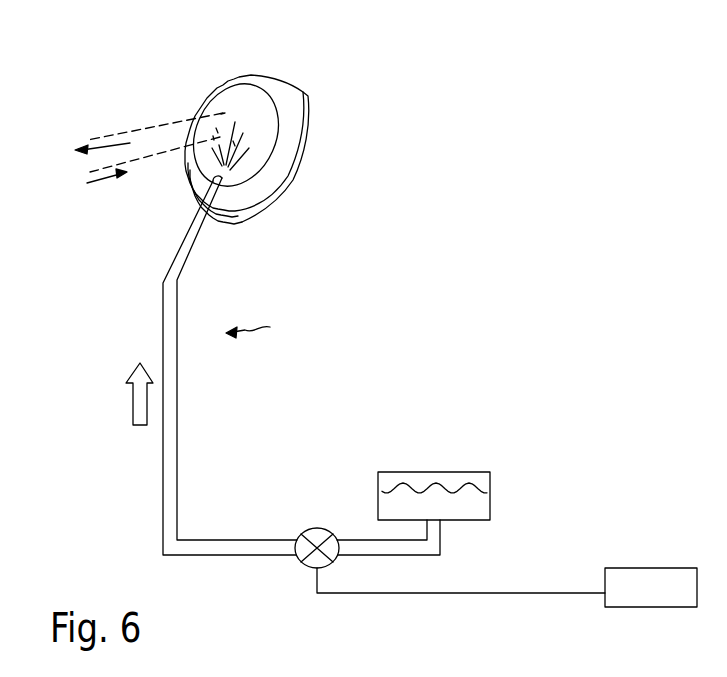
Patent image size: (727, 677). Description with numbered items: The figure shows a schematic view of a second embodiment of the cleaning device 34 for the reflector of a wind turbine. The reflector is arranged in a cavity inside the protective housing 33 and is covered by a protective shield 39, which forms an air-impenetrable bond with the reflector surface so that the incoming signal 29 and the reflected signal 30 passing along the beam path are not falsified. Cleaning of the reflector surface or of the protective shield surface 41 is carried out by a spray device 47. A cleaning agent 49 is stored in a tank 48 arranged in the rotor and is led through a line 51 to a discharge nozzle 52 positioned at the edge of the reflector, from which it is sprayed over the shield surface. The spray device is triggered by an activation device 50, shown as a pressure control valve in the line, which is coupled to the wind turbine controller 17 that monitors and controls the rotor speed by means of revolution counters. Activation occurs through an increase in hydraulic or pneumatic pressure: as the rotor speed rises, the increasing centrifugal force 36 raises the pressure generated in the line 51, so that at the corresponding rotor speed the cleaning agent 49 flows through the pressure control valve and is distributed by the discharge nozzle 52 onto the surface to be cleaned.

The wind turbine controller 17 is at (655, 572).
The incoming signal 29 is at (104, 184).
The reflected signal 30 is at (101, 144).
The protective housing 33 is at (295, 162).
The cleaning device 34 is at (415, 123).
The centrifugal force 36 is at (132, 402).
The protective shield 39 is at (265, 190).
The protective shield surface 41 is at (288, 97).
The spray device 47 is at (275, 328).
The tank 48 is at (495, 500).
The cleaning agent 49 is at (467, 505).
The activation device 50 is at (312, 528).
The line 51 is at (178, 390).
The discharge nozzle 52 is at (226, 179).